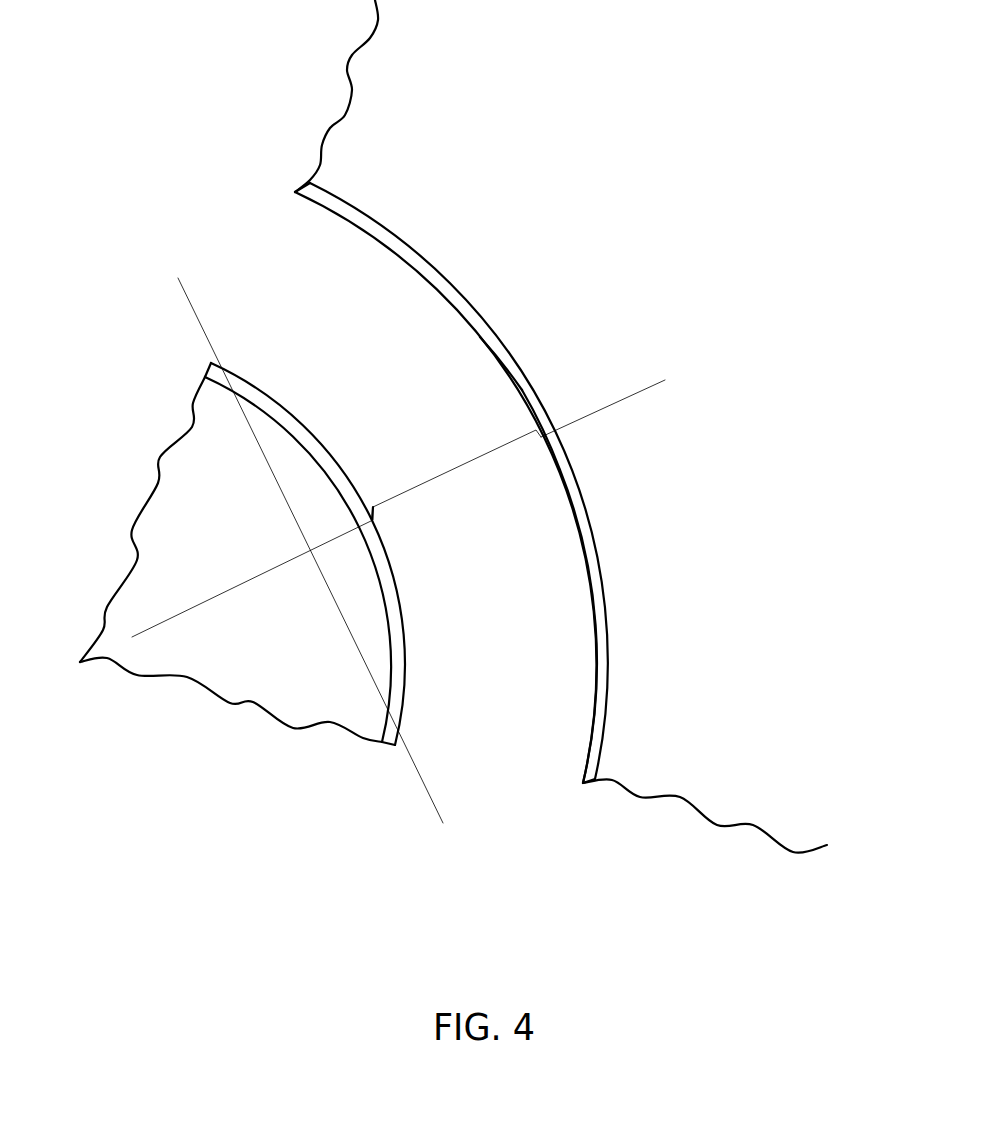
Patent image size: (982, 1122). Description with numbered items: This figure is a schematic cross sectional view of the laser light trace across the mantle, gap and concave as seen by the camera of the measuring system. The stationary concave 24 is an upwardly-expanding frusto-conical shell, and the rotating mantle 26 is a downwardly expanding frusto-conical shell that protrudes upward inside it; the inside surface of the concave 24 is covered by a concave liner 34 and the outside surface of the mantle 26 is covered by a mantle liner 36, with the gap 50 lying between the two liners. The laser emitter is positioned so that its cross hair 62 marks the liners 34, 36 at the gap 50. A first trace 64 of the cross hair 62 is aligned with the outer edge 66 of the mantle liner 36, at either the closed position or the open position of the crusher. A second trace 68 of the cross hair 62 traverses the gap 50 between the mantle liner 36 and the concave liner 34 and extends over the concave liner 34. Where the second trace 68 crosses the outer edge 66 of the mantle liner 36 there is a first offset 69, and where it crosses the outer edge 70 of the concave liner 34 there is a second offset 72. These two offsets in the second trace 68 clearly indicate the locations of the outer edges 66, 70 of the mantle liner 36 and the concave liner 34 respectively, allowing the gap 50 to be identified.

The concave 24 is at (722, 793).
The mantle 26 is at (287, 700).
The concave liner 34 is at (590, 770).
The mantle liner 36 is at (393, 740).
The gap 50 is at (282, 297).
The cross hair 62 is at (645, 392).
The first trace 64 is at (433, 805).
The outer edge of the mantle liner 66 is at (403, 712).
The second trace 68 is at (453, 467).
The first offset 69 is at (375, 522).
The outer edge of the concave liner 70 is at (590, 584).
The second offset 72 is at (541, 440).